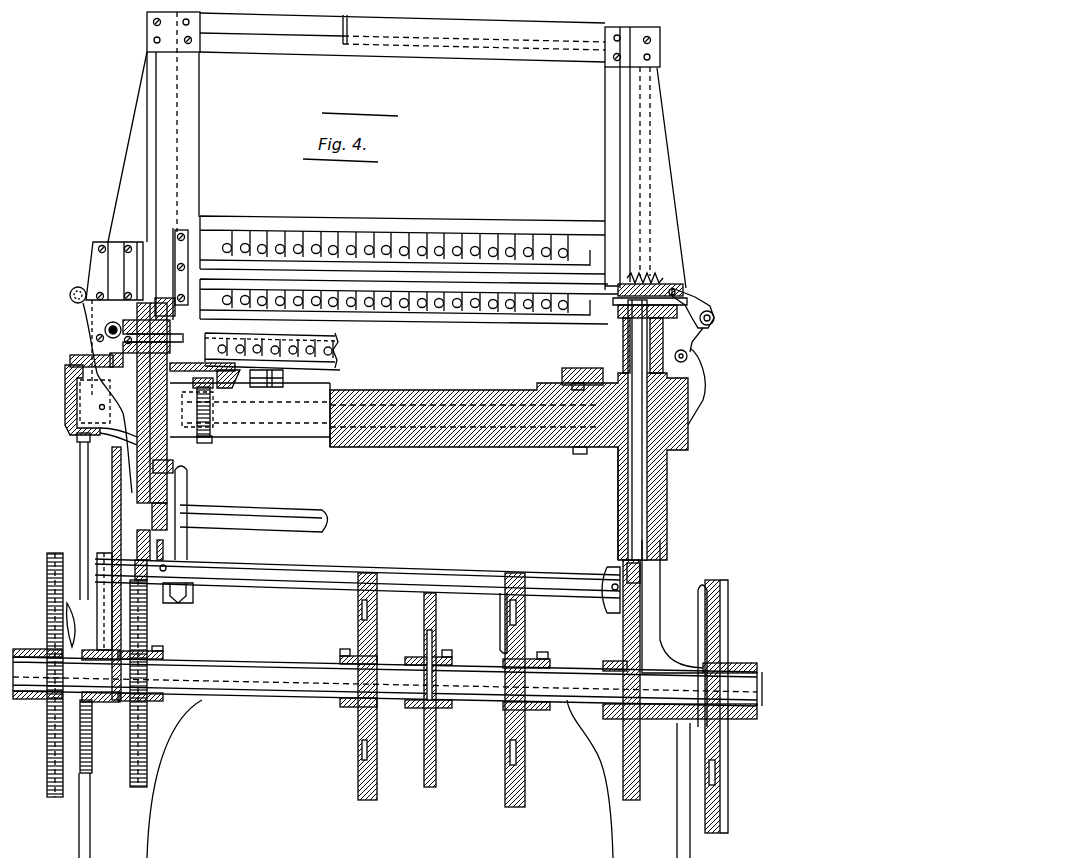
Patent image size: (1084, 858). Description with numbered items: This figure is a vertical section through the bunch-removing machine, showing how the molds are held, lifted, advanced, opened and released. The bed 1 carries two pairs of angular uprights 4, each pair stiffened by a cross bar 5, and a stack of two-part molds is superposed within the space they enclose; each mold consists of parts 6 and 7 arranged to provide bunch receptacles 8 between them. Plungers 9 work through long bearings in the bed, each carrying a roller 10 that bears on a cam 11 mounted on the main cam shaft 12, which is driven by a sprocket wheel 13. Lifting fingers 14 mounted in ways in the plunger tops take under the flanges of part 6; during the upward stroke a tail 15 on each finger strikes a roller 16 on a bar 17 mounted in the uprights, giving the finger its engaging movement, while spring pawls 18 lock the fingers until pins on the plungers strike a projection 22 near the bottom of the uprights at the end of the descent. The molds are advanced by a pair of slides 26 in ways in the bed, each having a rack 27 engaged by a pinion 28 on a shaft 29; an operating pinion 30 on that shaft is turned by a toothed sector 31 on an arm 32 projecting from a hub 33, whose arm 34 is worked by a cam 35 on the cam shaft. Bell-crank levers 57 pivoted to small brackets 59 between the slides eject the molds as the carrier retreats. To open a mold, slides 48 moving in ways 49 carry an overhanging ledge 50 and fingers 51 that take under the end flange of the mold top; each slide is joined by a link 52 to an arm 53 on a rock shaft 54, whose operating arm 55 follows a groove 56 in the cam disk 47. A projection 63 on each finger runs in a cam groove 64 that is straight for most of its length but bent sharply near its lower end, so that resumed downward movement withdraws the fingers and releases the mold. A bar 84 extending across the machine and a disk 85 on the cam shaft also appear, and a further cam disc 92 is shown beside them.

The bed 1 is at (493, 447).
The angular uprights 4 is at (190, 123).
The cross bar 5 is at (248, 50).
The mold part 6 is at (393, 230).
The mold part 7 is at (382, 257).
The bunch receptacles 8 is at (440, 250).
The plungers 9 is at (667, 495).
The roller 10 is at (152, 593).
The cam 11 is at (128, 745).
The main cam shaft 12 is at (223, 683).
The sprocket wheel 13 is at (435, 750).
The lifting fingers 14 is at (614, 293).
The tail 15 is at (700, 303).
The roller 16 is at (714, 318).
The bar 17 is at (710, 326).
The spring pawls 18 is at (680, 290).
The projection 22 is at (700, 362).
The slides 26 is at (560, 378).
The rack 27 is at (578, 382).
The pinion 28 is at (578, 455).
The shaft 29 is at (305, 420).
The operating pinion 30 is at (68, 415).
The toothed sector 31 is at (78, 440).
The arm 32 is at (80, 482).
The hub 33 is at (68, 603).
The arm 34 is at (72, 637).
The cam 35 is at (45, 740).
The cam disk 47 is at (722, 812).
The slides 48 is at (170, 445).
The ways 49 is at (162, 246).
The overhanging ledge 50 is at (185, 310).
The fingers 51 is at (178, 337).
The link 52 is at (180, 487).
The arm 53 is at (177, 603).
The rock shaft 54 is at (305, 588).
The operating arm 55 is at (700, 652).
The groove 56 is at (710, 785).
The bell-crank levers 57 is at (285, 381).
The brackets 59 is at (273, 387).
The projection 63 is at (105, 330).
The cam groove 64 is at (112, 252).
The bar 84 is at (317, 517).
The disk 85 is at (525, 788).
The cam disc 92 is at (357, 783).